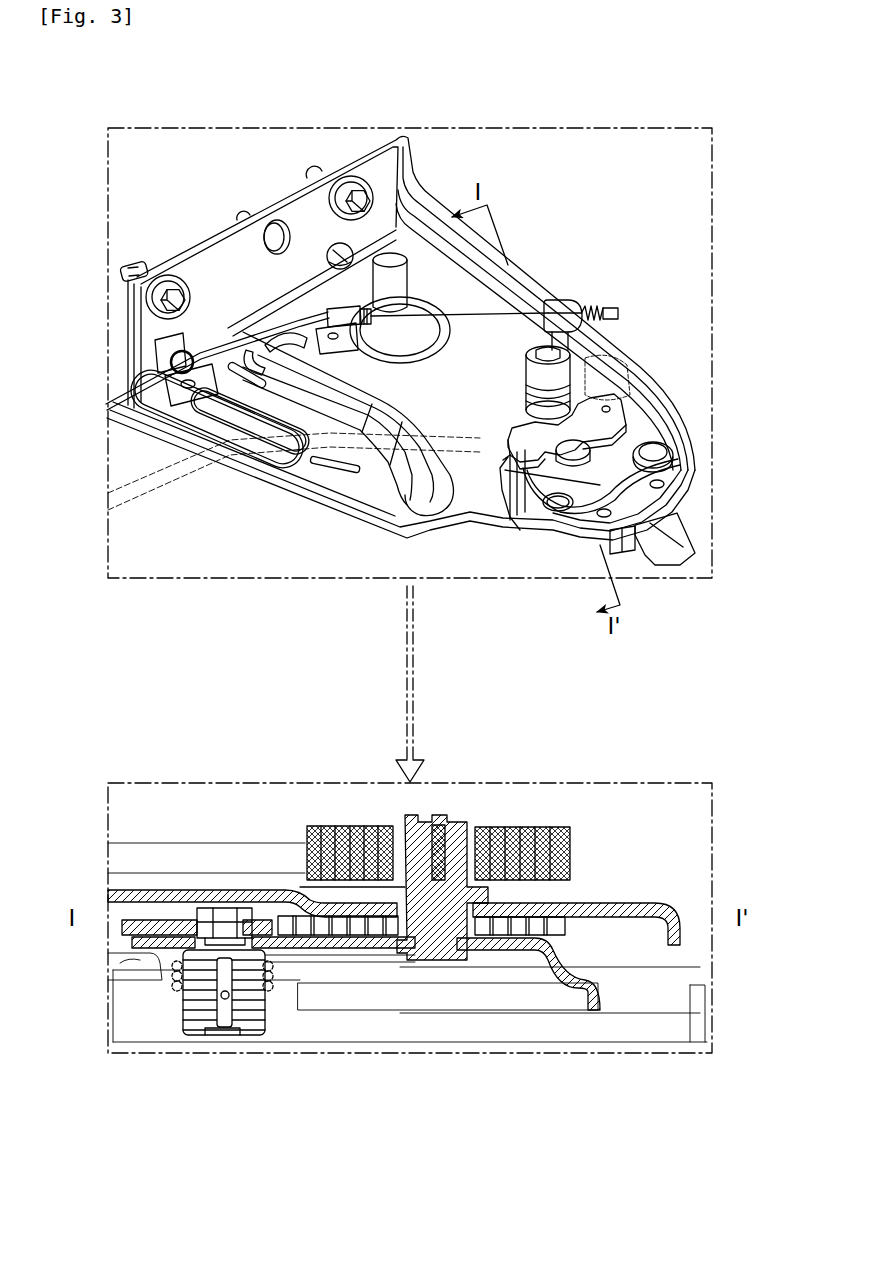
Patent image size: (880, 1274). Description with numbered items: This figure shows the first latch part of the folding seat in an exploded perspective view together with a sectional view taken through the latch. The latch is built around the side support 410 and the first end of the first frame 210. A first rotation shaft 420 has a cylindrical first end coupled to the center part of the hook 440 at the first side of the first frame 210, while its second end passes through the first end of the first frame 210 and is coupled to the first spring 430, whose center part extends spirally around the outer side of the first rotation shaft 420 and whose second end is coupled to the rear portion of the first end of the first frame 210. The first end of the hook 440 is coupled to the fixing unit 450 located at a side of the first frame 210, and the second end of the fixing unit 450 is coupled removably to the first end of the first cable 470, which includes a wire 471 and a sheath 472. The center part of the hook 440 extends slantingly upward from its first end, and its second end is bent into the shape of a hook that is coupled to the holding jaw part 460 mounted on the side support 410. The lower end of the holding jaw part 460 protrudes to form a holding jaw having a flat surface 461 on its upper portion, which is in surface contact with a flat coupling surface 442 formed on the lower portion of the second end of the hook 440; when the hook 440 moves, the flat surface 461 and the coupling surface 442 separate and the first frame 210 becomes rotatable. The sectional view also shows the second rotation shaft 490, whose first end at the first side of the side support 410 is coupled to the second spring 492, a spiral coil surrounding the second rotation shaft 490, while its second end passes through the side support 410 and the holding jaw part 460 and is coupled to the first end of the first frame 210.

The first frame 210 is at (156, 498).
The side support 410 is at (331, 472).
The first rotation shaft 420 is at (535, 360).
The first spring 430 is at (633, 343).
The hook 440 is at (597, 358).
The coupling surface 442 is at (614, 418).
The fixing unit 450 is at (565, 307).
The holding jaw part 460 is at (627, 473).
The flat surface 461 is at (567, 432).
The first cable 470 is at (327, 229).
The wire 471 is at (440, 300).
The sheath 472 is at (295, 330).
The second rotation shaft 490 is at (620, 447).
The second spring 492 is at (336, 828).